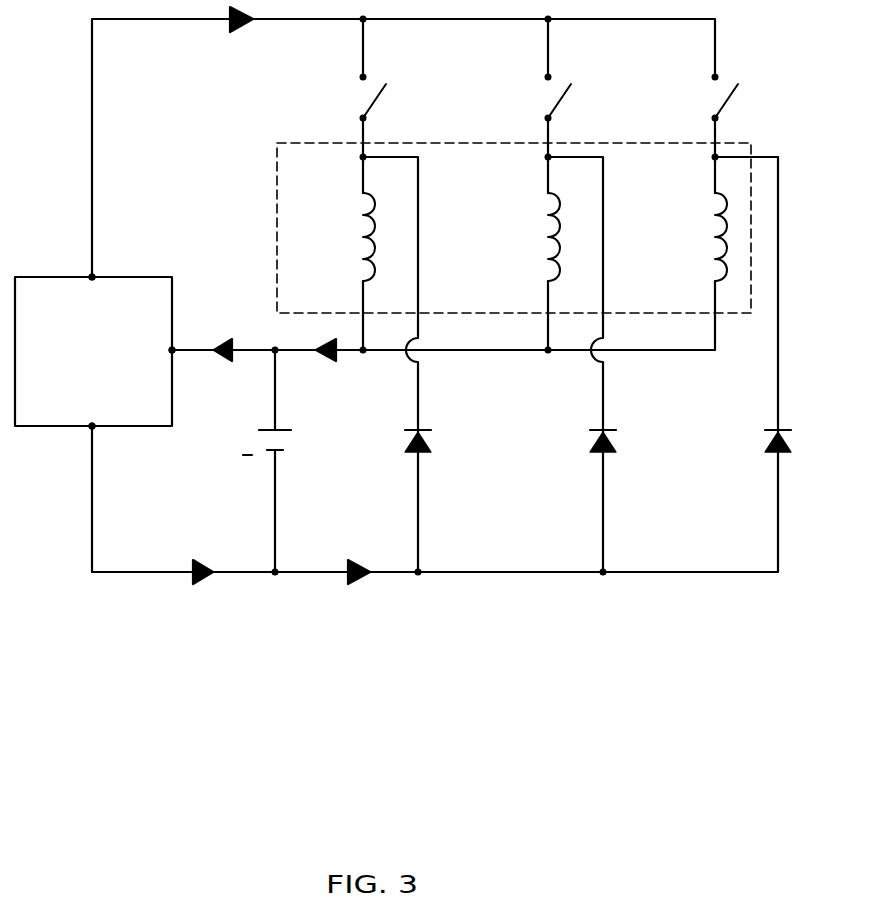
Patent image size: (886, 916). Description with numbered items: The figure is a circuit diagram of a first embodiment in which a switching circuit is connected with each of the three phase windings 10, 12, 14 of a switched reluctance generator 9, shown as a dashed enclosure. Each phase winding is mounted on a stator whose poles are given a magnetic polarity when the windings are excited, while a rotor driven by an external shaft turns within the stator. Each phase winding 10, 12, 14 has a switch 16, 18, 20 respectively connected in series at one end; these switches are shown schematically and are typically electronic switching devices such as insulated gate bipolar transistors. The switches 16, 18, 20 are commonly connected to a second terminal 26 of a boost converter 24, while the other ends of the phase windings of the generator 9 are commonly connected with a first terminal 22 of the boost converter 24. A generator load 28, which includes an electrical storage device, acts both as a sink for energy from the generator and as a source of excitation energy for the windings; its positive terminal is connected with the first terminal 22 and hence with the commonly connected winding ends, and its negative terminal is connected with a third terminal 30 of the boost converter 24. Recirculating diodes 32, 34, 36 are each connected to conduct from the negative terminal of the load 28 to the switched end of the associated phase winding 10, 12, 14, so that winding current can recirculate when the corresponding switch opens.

The switched reluctance generator 9 is at (752, 240).
The phase winding 10 is at (363, 237).
The phase winding 12 is at (548, 237).
The phase winding 14 is at (715, 237).
The switch 16 is at (372, 104).
The switch 18 is at (557, 104).
The switch 20 is at (724, 104).
The first terminal 22 is at (174, 349).
The boost converter 24 is at (108, 372).
The second terminal 26 is at (94, 276).
The generator load 28 is at (292, 443).
The third terminal 30 is at (83, 429).
The recirculating diode 32 is at (428, 440).
The recirculating diode 34 is at (614, 440).
The recirculating diode 36 is at (789, 440).